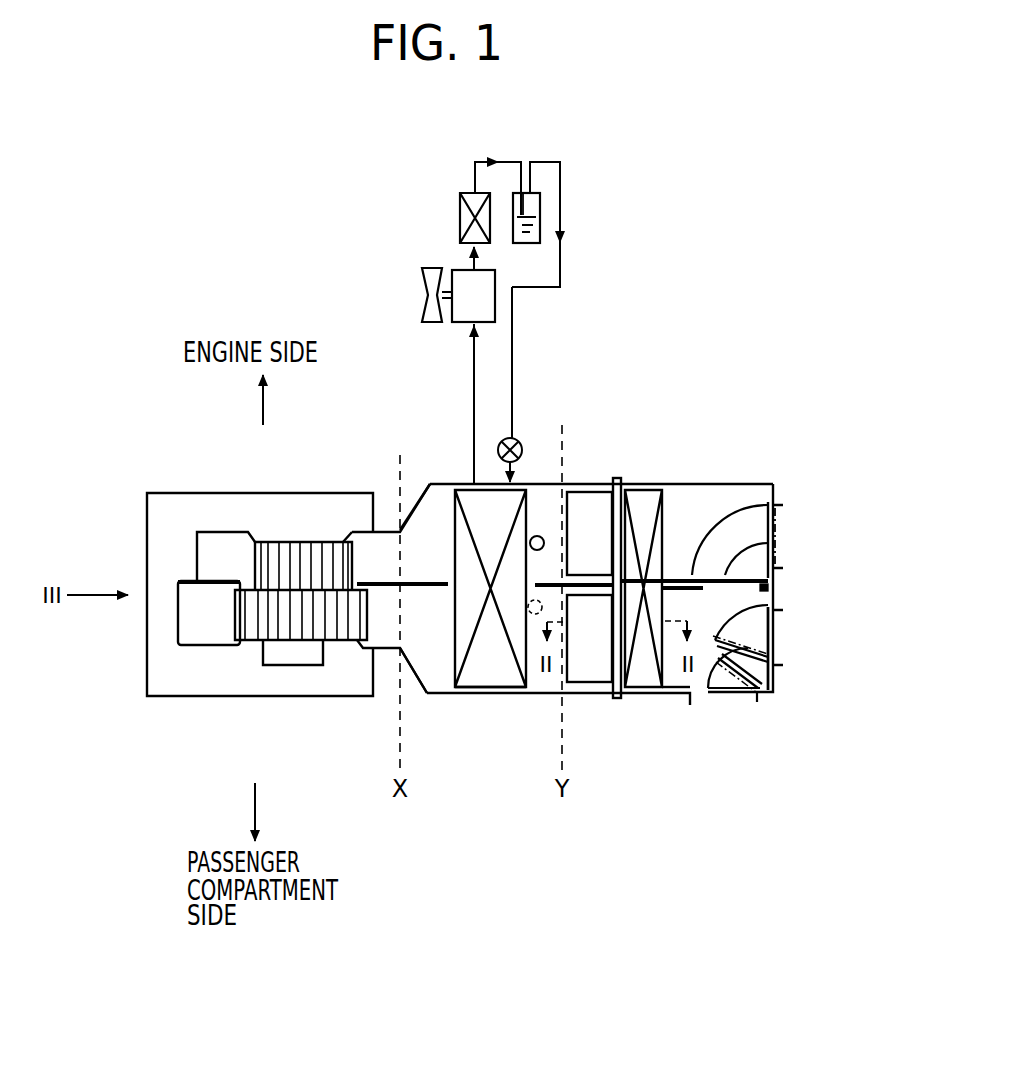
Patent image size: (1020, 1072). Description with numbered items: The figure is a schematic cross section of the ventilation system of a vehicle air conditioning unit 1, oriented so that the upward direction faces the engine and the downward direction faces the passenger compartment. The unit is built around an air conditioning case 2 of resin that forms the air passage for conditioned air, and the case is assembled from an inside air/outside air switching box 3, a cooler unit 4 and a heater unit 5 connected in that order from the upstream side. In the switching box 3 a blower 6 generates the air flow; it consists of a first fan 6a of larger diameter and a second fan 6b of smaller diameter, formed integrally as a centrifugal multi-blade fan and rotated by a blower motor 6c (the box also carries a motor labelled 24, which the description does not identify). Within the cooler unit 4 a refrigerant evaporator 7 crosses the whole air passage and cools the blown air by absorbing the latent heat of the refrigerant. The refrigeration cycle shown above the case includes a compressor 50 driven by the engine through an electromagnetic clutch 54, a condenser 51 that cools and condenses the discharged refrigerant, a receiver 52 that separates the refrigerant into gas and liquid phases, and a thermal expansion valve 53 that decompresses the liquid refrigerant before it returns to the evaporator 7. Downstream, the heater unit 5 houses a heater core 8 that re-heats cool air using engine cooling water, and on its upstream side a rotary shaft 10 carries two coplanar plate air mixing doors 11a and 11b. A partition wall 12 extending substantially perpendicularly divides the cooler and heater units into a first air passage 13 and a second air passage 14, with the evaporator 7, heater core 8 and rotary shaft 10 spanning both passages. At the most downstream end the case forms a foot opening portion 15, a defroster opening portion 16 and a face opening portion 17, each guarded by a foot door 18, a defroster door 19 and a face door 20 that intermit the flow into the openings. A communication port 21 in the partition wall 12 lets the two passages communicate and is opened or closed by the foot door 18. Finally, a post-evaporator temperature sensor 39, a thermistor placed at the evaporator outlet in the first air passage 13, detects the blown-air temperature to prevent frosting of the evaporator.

The air conditioning unit 1 is at (577, 457).
The air conditioning case 2 is at (733, 484).
The inside air/outside air switching box 3 is at (306, 482).
The cooler unit 4 is at (500, 699).
The heater unit 5 is at (677, 703).
The blower 6 is at (302, 704).
The first fan 6a is at (282, 550).
The second fan 6b is at (260, 633).
The blower motor 6c is at (315, 650).
The refrigerant evaporator 7 is at (485, 690).
The heater core 8 is at (642, 689).
The rotary shaft 10 is at (619, 478).
The air mixing door 11a is at (590, 503).
The air mixing door 11b is at (593, 689).
The partition wall 12 is at (431, 580).
The first air passage 13 is at (416, 520).
The second air passage 14 is at (445, 690).
The foot opening portion 15 is at (782, 512).
The defroster opening portion 16 is at (780, 628).
The face opening portion 17 is at (752, 700).
The foot door 18 is at (730, 555).
The defroster door 19 is at (775, 648).
The face door 20 is at (726, 694).
The communication port 21 is at (725, 583).
The blower motor 24 is at (193, 578).
The post-evaporator temperature sensor 39 is at (537, 536).
The compressor 50 is at (465, 273).
The condenser 51 is at (460, 205).
The receiver 52 is at (540, 205).
The thermal expansion valve 53 is at (514, 436).
The electromagnetic clutch 54 is at (422, 300).